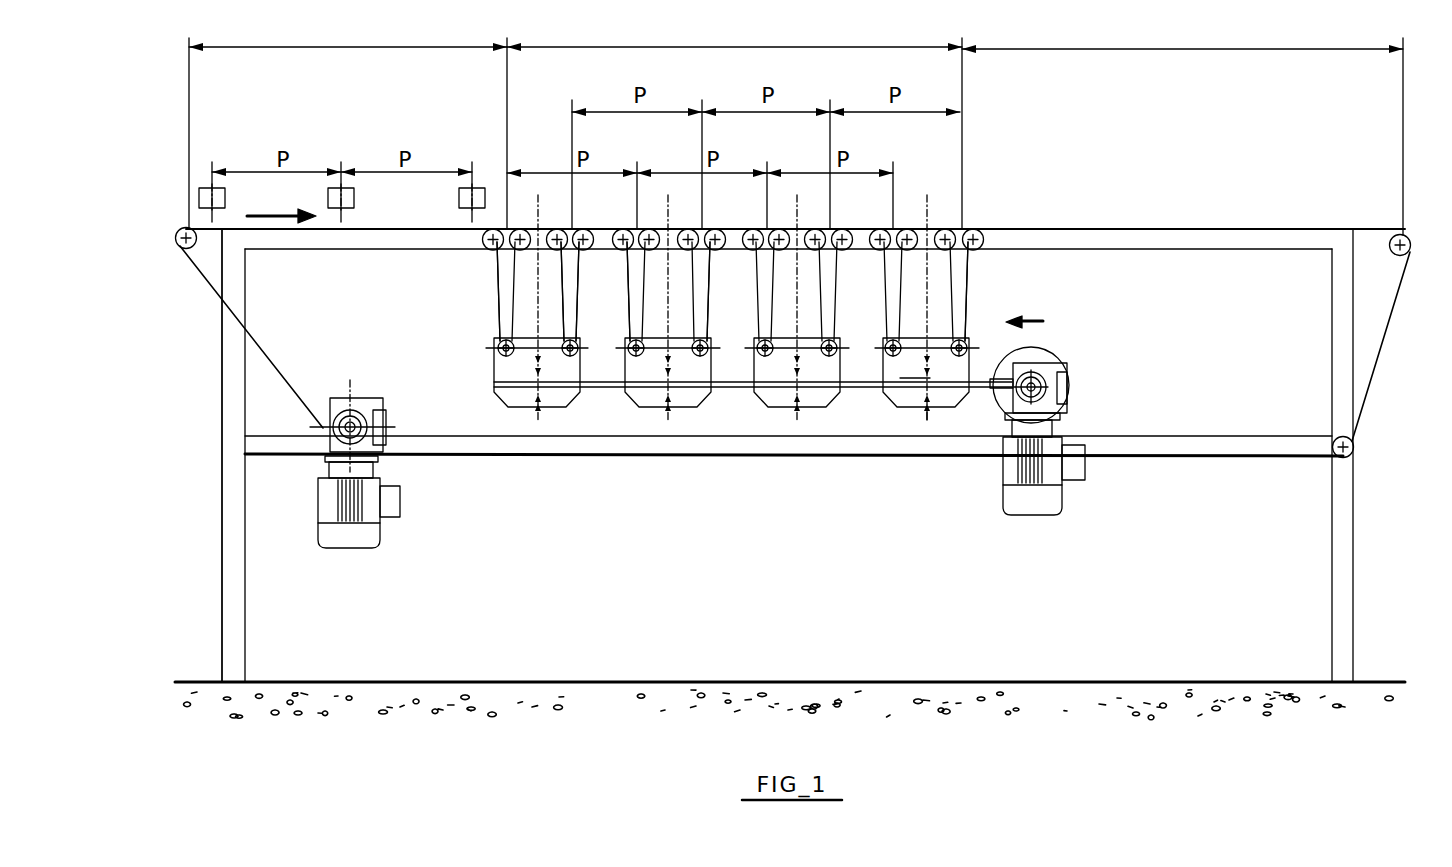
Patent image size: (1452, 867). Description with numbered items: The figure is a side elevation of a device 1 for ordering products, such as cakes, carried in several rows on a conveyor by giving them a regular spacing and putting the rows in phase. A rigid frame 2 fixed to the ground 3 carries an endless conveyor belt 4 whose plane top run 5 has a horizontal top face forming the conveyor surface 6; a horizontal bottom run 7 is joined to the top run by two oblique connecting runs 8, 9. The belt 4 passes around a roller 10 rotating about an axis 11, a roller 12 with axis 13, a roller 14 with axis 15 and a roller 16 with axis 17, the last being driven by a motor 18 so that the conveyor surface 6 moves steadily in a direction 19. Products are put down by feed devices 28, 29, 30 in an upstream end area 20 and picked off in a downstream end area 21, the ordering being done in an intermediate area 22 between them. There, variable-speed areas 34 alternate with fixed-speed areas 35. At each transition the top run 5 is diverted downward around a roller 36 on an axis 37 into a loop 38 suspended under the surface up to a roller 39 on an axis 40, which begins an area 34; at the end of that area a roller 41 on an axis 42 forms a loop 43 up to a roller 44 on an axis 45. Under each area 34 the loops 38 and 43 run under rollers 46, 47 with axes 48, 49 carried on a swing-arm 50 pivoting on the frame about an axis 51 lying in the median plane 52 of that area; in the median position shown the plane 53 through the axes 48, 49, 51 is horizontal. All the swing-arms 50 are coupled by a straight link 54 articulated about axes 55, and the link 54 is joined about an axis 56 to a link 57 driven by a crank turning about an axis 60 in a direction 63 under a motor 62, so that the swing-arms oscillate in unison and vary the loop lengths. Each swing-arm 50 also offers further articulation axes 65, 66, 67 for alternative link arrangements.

The device 1 is at (204, 469).
The frame 2 is at (222, 595).
The ground 3 is at (470, 682).
The conveyor belt 4 is at (202, 285).
The top run 5 is at (1047, 229).
The conveyor surface 6 is at (1103, 229).
The bottom run 7 is at (1122, 465).
The connecting run 8 is at (222, 350).
The connecting run 9 is at (1382, 351).
The roller 10 is at (182, 247).
The axis 11 is at (182, 226).
The roller 12 is at (1404, 234).
The axis 13 is at (1405, 257).
The roller 14 is at (1350, 458).
The axis 15 is at (1353, 440).
The roller 16 is at (332, 400).
The axis 17 is at (362, 402).
The motor 18 is at (386, 531).
The direction 19 is at (276, 214).
The upstream end area 20 is at (348, 122).
The downstream end area 21 is at (1182, 127).
The intermediate area 22 is at (734, 122).
The feed device 28 is at (226, 199).
The feed device 29 is at (354, 200).
The feed device 30 is at (484, 186).
The area 34 is at (556, 229).
The area 35 is at (592, 229).
The roller 36 is at (486, 249).
The axis 37 is at (498, 259).
The loop 38 is at (496, 326).
The roller 39 is at (530, 300).
The axis 40 is at (519, 229).
The roller 41 is at (713, 229).
The axis 42 is at (576, 229).
The loop 43 is at (575, 312).
The roller 44 is at (570, 250).
The axis 45 is at (583, 251).
The roller 46 is at (493, 363).
The roller 47 is at (575, 353).
The axis 48 is at (505, 332).
The axis 49 is at (574, 341).
The swing-arm 50 is at (500, 399).
The axis 51 is at (543, 331).
The median transverse vertical plane 52 is at (540, 408).
The plane 53 is at (480, 349).
The link 54 is at (609, 389).
The axis 55 is at (534, 385).
The axis 56 is at (993, 378).
The link 57 is at (1031, 347).
The axis 60 is at (1075, 396).
The motor 62 is at (1003, 516).
The direction 63 is at (1043, 321).
The articulation axis 65 is at (915, 358).
The articulation axis 66 is at (920, 379).
The articulation axis 67 is at (928, 411).